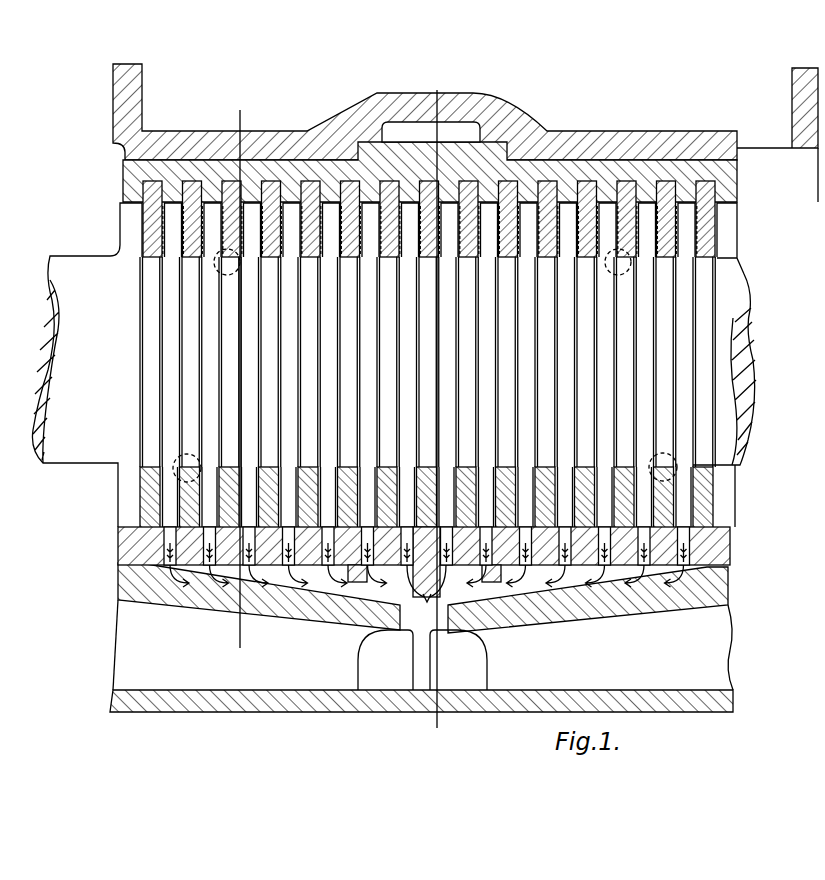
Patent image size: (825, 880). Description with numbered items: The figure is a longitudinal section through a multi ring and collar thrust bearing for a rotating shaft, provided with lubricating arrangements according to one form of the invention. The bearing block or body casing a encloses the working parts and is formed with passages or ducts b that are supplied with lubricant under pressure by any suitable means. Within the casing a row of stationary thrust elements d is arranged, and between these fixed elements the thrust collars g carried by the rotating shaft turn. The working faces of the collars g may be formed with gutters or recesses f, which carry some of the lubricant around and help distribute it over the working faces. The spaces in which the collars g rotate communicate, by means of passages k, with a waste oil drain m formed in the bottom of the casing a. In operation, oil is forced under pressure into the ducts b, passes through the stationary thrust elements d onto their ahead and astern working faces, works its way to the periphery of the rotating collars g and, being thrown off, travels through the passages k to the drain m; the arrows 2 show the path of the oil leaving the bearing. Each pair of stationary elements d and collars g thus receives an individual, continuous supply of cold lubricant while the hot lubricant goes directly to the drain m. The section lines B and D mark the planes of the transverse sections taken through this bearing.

The bearing block or body casing a is at (613, 135).
The passages or ducts b is at (471, 134).
The stationary thrust elements d is at (162, 258).
The gutters or recesses f is at (240, 268).
The thrust collars g is at (167, 326).
The passages k is at (140, 542).
The waste oil drain m is at (413, 620).
The arrows 2 is at (217, 560).
The section line B— B is at (436, 411).
The section line D— D is at (240, 380).